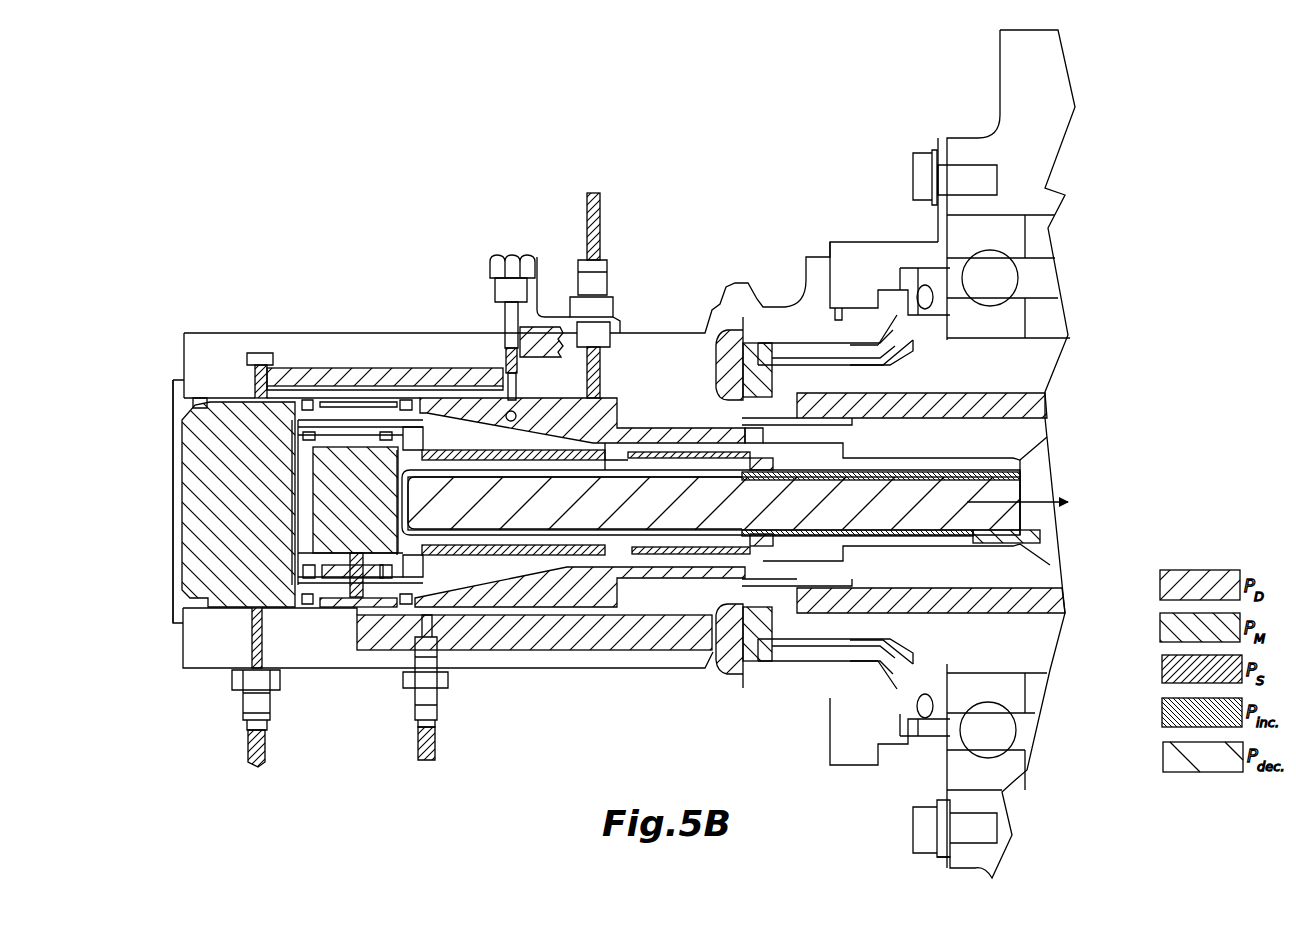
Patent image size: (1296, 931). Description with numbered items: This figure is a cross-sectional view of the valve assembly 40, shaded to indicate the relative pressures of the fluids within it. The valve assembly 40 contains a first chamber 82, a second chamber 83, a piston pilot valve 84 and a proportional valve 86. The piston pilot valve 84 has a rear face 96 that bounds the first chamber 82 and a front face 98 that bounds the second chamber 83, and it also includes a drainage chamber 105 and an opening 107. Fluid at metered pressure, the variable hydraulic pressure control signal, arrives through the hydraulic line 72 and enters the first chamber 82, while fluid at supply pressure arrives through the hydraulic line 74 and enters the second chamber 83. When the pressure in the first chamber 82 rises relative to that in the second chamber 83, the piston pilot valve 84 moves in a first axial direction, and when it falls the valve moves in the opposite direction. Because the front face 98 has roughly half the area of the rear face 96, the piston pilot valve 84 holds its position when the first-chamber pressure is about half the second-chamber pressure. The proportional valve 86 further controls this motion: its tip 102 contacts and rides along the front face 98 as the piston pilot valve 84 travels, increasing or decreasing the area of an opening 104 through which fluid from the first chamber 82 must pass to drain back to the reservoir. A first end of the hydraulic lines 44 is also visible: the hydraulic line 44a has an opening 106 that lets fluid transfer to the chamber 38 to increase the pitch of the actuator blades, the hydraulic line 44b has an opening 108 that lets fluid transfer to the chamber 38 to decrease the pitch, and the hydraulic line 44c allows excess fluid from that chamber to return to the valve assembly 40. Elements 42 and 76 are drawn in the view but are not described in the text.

The actuator chamber 38 is at (1043, 540).
The valve assembly 40 is at (692, 296).
The mounting flange 42 is at (1015, 360).
The hydraulic lines 44 is at (943, 494).
The hydraulic line 44a is at (1010, 475).
The hydraulic line 44b is at (1017, 490).
The hydraulic line 44c is at (1030, 410).
The hydraulic line 72 is at (257, 743).
The hydraulic line 74 is at (600, 222).
The second fitting 76 is at (423, 734).
The first chamber 82 is at (207, 551).
The second chamber 83 is at (617, 418).
The piston pilot valve 84 is at (484, 563).
The proportional valve 86 is at (513, 290).
The rear face 96 is at (290, 458).
The front face 98 is at (565, 430).
The tip 102 is at (514, 413).
The opening 104 is at (503, 360).
The drainage chamber 105 is at (440, 453).
The opening 106 is at (620, 465).
The opening 107 is at (683, 458).
The opening 108 is at (775, 465).